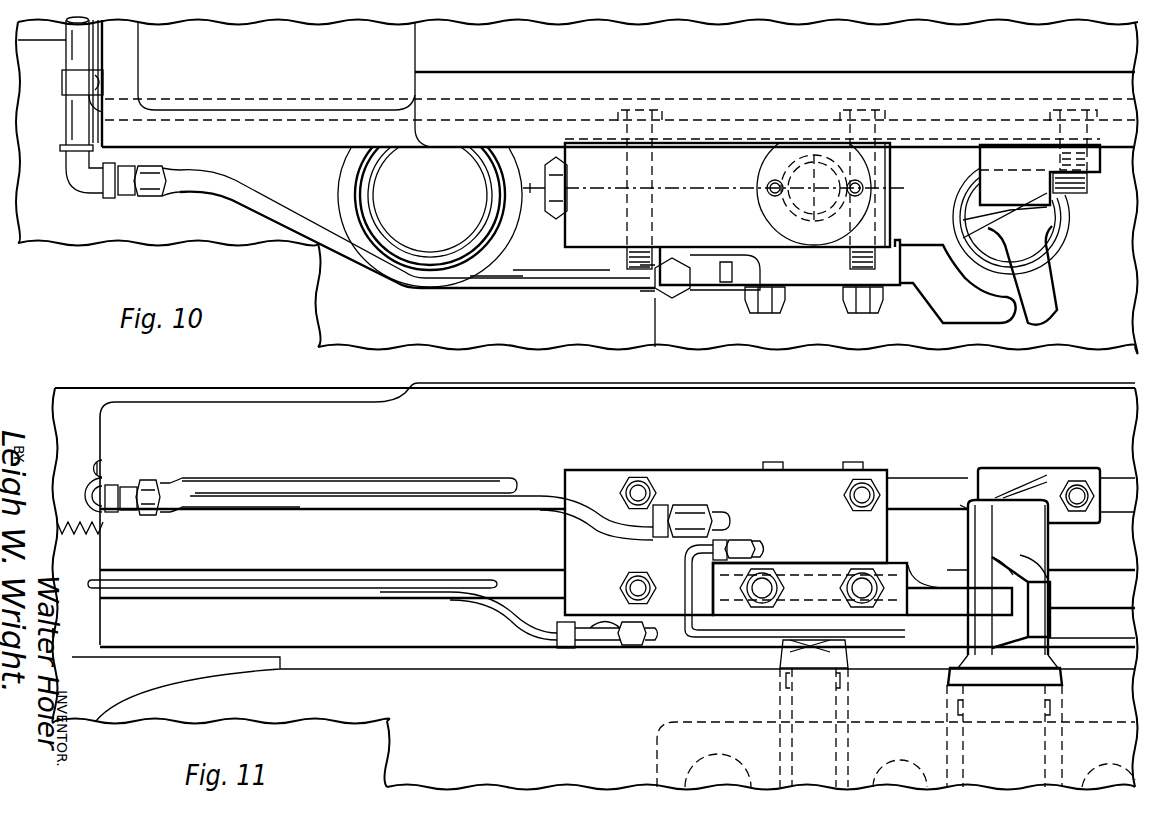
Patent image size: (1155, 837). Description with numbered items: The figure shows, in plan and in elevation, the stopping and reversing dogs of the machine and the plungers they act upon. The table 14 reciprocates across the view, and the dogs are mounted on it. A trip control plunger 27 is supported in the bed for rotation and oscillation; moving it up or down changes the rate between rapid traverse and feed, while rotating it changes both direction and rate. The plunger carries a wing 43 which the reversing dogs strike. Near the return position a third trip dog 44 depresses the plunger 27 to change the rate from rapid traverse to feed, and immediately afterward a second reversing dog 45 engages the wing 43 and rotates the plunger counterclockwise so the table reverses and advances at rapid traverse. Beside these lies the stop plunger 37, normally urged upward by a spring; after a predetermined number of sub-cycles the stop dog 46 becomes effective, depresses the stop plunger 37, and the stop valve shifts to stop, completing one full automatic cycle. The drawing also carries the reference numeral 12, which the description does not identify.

In FIG. 10, the center line of cylinder axis 12 is at (530, 195).
In FIG. 10, the table 14 is at (435, 55).
In FIG. 11, the table 14 is at (232, 412).
In FIG. 11, the trip control plunger 27 is at (1030, 657).
In FIG. 11, the stop plunger 37 is at (800, 645).
In FIG. 10, the wing 43 is at (1038, 302).
In FIG. 11, the wing 43 is at (1040, 612).
In FIG. 10, the third trip dog 44 is at (1012, 185).
In FIG. 11, the third trip dog 44 is at (1048, 480).
In FIG. 10, the second reversing dog 45 is at (978, 308).
In FIG. 11, the second reversing dog 45 is at (962, 600).
In FIG. 11, the stop dog 46 is at (830, 640).